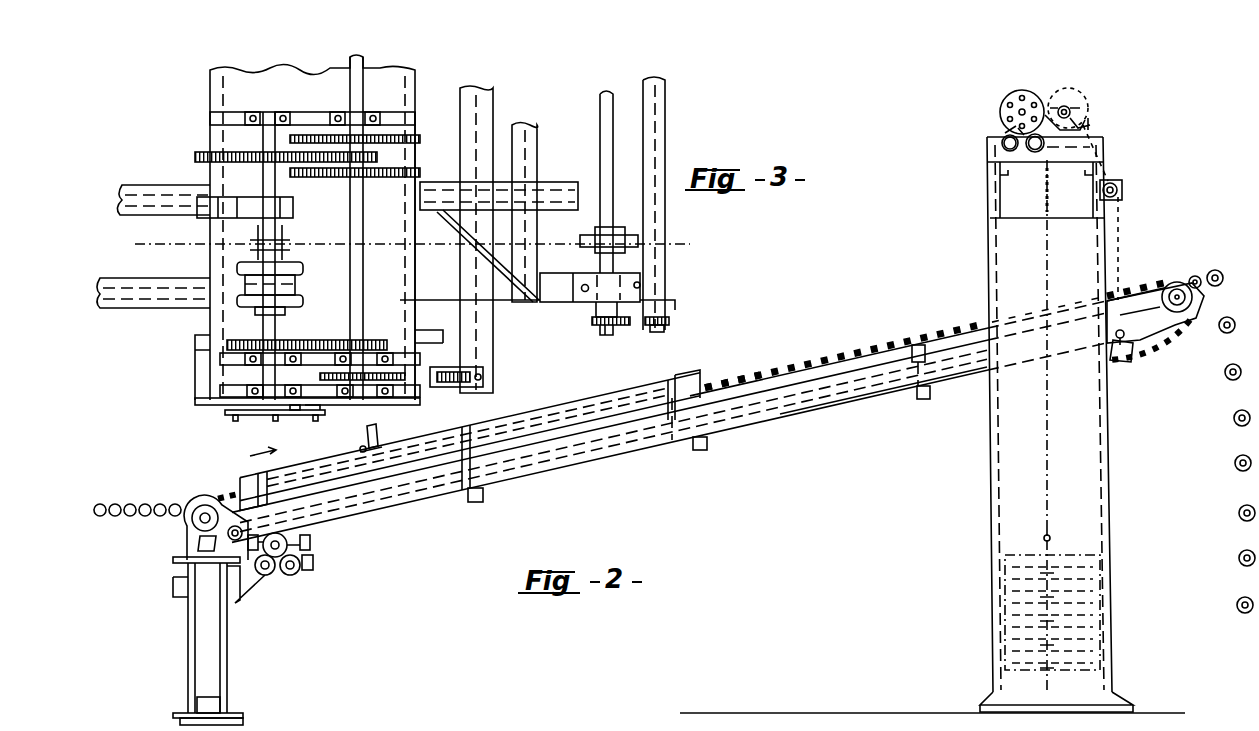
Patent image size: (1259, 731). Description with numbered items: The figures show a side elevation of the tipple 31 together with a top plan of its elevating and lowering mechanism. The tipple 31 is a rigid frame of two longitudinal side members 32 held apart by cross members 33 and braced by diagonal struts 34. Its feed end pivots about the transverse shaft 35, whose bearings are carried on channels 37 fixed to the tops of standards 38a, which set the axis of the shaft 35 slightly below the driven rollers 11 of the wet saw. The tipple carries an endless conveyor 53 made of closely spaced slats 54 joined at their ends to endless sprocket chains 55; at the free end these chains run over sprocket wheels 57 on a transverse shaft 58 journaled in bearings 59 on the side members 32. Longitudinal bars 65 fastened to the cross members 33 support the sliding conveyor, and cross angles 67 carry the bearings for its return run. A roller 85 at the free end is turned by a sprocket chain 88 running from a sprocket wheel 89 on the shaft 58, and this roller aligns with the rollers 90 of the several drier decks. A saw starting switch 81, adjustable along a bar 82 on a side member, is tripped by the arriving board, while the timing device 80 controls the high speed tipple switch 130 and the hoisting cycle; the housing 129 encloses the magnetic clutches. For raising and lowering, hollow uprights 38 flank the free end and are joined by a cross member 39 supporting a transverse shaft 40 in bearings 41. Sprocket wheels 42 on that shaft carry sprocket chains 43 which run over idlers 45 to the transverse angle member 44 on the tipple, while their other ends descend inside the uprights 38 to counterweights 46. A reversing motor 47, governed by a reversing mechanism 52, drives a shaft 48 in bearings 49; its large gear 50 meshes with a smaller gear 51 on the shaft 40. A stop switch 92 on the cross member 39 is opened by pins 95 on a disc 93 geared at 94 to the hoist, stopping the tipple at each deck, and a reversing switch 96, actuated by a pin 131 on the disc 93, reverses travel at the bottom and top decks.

In FIG. 2, the rollers 11 is at (118, 505).
In FIG. 2, the tipple 31 is at (605, 463).
In FIG. 3, the side members 32 is at (562, 300).
In FIG. 2, the side members 32 is at (788, 420).
In FIG. 3, the cross members 33 is at (538, 158).
In FIG. 2, the cross members 33 is at (923, 345).
In FIG. 3, the diagonal struts 34 is at (525, 265).
In FIG. 2, the transverse shaft 35 is at (201, 500).
In FIG. 2, the transversely extending channels 37 is at (188, 583).
In FIG. 2, the hollow uprights 38 is at (1108, 456).
In FIG. 2, the standards 38a is at (215, 672).
In FIG. 3, the cross member 39 is at (208, 322).
In FIG. 3, the transverse shaft 40 is at (368, 208).
In FIG. 2, the transverse shaft 40 is at (1066, 100).
In FIG. 3, the bearings 41 is at (364, 118).
In FIG. 2, the bearings 41 is at (1088, 120).
In FIG. 3, the sprocket wheels 42 is at (398, 382).
In FIG. 2, the sprocket wheels 42 is at (1058, 92).
In FIG. 2, the sprocket chains 43 is at (1120, 225).
In FIG. 3, the transverse angle member 44 is at (494, 352).
In FIG. 2, the transverse angle member 44 is at (1133, 354).
In FIG. 3, the idlers 45 is at (447, 370).
In FIG. 2, the idlers 45 is at (1118, 188).
In FIG. 2, the counterweights 46 is at (1095, 593).
In FIG. 3, the motor 47 is at (304, 280).
In FIG. 3, the shaft 48 is at (268, 112).
In FIG. 3, the bearings 49 is at (286, 116).
In FIG. 3, the gear 50 is at (198, 156).
In FIG. 3, the gear 51 is at (400, 158).
In FIG. 3, the reversing mechanism 52 is at (294, 210).
In FIG. 2, the endless conveyor 53 is at (737, 379).
In FIG. 2, the slats 54 is at (821, 362).
In FIG. 3, the endless sprocket chains 55 is at (140, 244).
In FIG. 3, the sprocket wheels 57 is at (640, 243).
In FIG. 3, the transverse shaft 58 is at (614, 165).
In FIG. 3, the bearings 59 is at (586, 305).
In FIG. 3, the longitudinally extending bars 65 is at (548, 185).
In FIG. 2, the cross angles 67 is at (484, 495).
In FIG. 2, the timing device 80 is at (310, 552).
In FIG. 2, the saw starting switch 81 is at (380, 440).
In FIG. 2, the bar 82 is at (524, 418).
In FIG. 3, the roller 85 is at (660, 100).
In FIG. 2, the roller 85 is at (1184, 283).
In FIG. 3, the sprocket chain 88 is at (671, 320).
In FIG. 3, the sprocket wheel 89 is at (615, 326).
In FIG. 2, the rollers 90 is at (1236, 413).
In FIG. 2, the stop switch 92 is at (1004, 137).
In FIG. 3, the disc 93 is at (262, 416).
In FIG. 2, the disc 93 is at (1015, 90).
In FIG. 3, the gearing 94 is at (300, 340).
In FIG. 3, the pins 95 is at (316, 417).
In FIG. 2, the pins 95 is at (1002, 100).
In FIG. 2, the reversing switch 96 is at (1032, 153).
In FIG. 2, the housing 129 is at (270, 576).
In FIG. 2, the high speed tipple switch 130 is at (292, 576).
In FIG. 3, the pin 131 is at (293, 412).